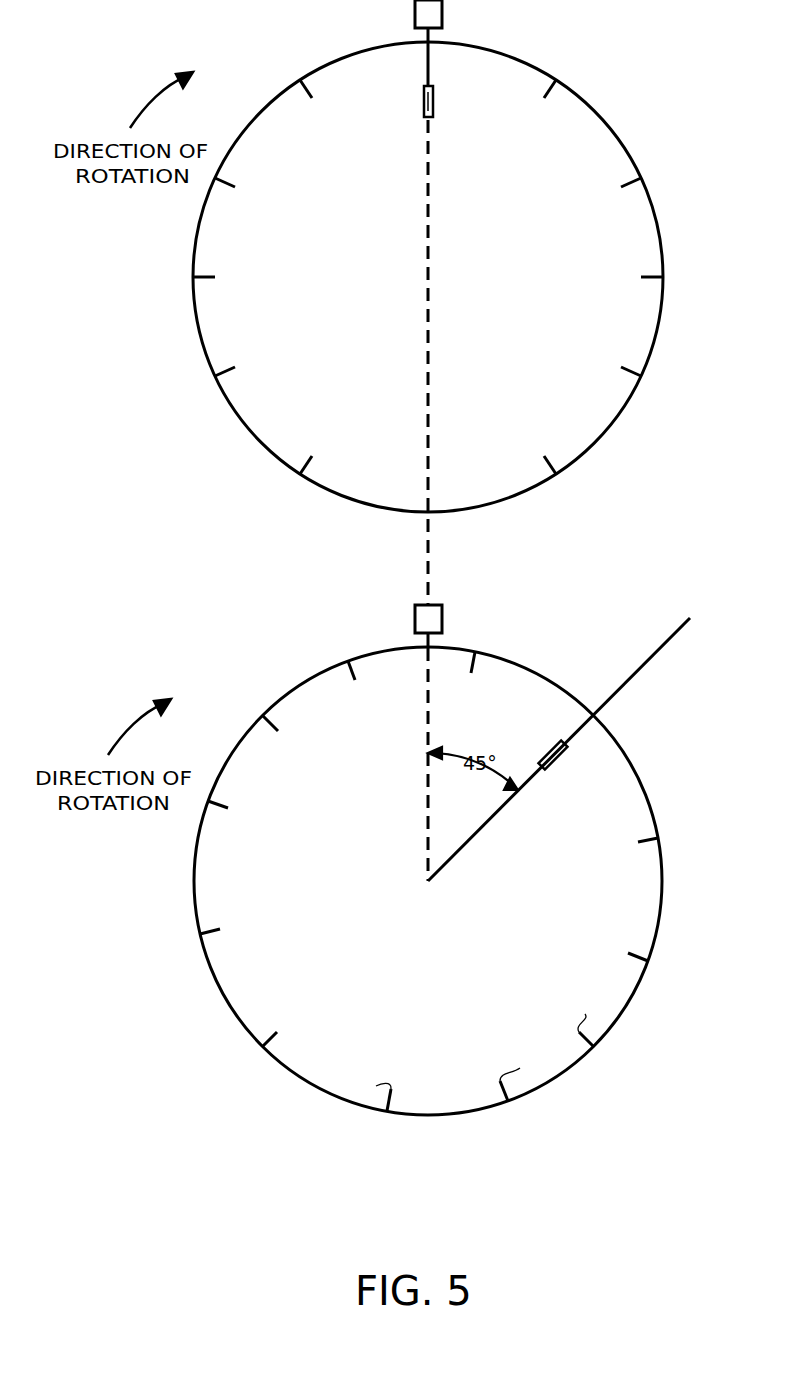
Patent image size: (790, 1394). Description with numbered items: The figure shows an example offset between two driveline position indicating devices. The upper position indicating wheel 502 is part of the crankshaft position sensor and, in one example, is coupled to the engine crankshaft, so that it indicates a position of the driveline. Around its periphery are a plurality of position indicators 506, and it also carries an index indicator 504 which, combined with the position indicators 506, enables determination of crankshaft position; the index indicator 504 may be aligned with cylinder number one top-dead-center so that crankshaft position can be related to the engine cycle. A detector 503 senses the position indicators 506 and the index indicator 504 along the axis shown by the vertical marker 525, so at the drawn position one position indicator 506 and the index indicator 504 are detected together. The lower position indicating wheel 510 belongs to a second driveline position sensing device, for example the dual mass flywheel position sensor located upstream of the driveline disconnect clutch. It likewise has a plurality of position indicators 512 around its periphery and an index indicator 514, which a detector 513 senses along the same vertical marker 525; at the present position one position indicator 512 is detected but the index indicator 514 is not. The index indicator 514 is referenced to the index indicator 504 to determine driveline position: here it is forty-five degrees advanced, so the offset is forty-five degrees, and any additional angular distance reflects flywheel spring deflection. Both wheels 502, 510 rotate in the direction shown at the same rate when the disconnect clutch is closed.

The position indicating wheel 502 is at (626, 408).
The detector 503 is at (442, 12).
The index indicator 504 is at (433, 98).
The position indicators 506 is at (312, 98).
The position indicating wheel 510 is at (630, 1010).
The position indicators 512 is at (355, 680).
The detector 513 is at (442, 618).
The index indicator 514 is at (560, 765).
The vertical marker 525 is at (430, 532).